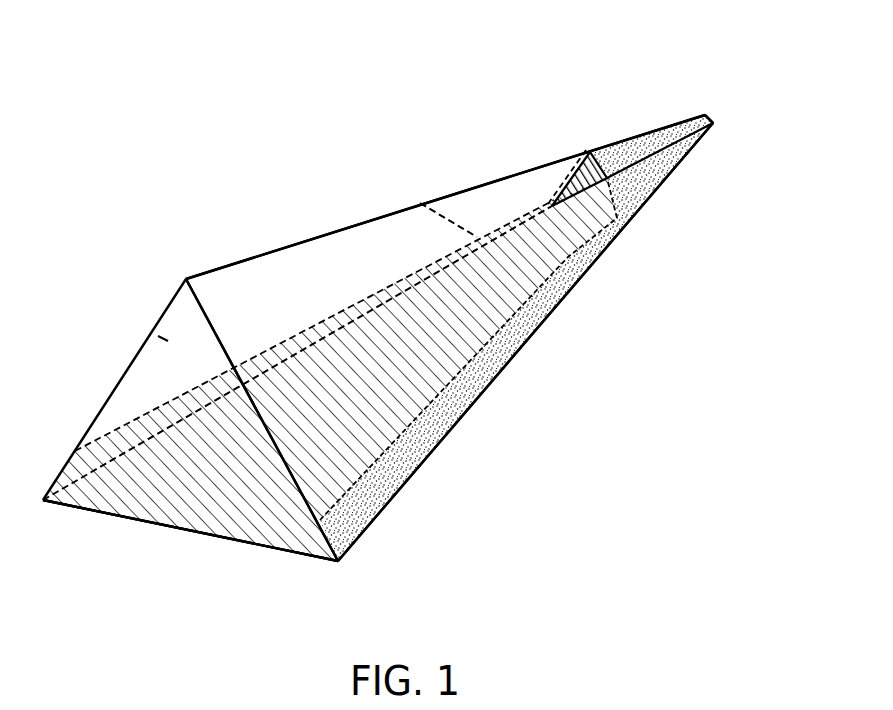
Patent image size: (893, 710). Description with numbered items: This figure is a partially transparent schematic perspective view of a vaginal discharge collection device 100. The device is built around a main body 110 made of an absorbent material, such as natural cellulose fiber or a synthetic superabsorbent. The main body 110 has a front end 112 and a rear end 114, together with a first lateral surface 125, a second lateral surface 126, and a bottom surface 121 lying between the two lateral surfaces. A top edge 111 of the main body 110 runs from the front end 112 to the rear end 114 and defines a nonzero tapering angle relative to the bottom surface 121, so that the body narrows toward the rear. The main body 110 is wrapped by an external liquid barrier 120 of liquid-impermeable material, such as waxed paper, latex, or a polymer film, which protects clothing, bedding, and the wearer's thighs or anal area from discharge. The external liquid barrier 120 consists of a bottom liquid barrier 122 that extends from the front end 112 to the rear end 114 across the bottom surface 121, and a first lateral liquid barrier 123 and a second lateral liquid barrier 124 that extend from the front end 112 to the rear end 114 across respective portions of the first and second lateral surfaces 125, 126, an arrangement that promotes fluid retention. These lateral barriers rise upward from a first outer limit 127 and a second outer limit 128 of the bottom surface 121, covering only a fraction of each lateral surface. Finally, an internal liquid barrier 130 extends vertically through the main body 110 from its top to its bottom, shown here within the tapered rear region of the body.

The vaginal discharge collection device 100 is at (132, 94).
The main body 110 is at (262, 233).
The top edge 111 is at (317, 237).
The front end 112 is at (717, 122).
The rear end 114 is at (716, 103).
The external liquid barrier 120 is at (640, 133).
The bottom surface 121 is at (308, 551).
The bottom liquid barrier 122 is at (262, 420).
The first lateral liquid barrier 123 is at (638, 190).
The second lateral liquid barrier 124 is at (163, 428).
The first lateral surface 125 is at (440, 353).
The second lateral surface 126 is at (152, 333).
The first outer limit 127 is at (468, 420).
The second outer limit 128 is at (420, 203).
The internal liquid barrier 130 is at (588, 172).